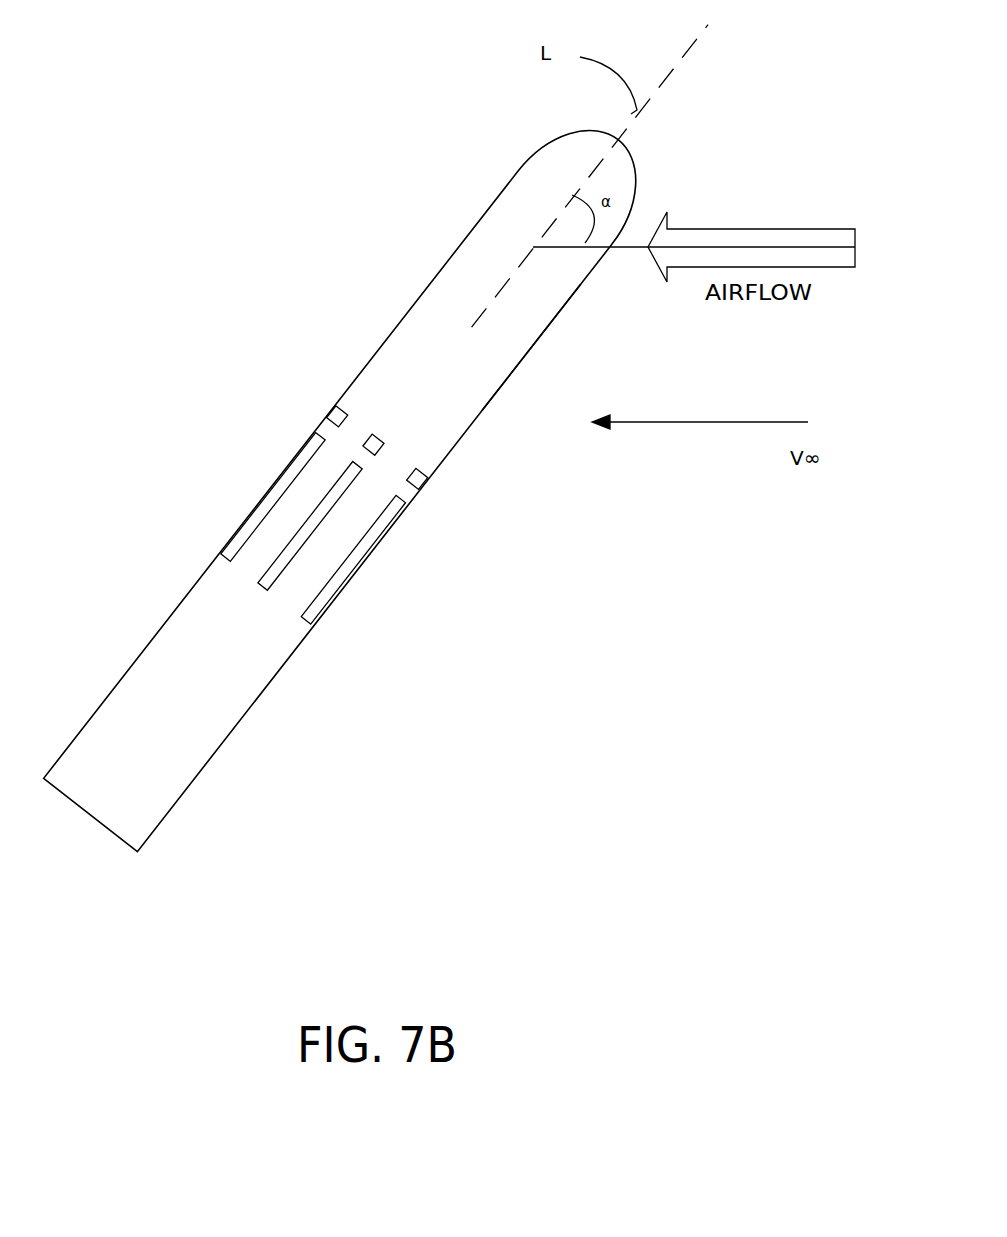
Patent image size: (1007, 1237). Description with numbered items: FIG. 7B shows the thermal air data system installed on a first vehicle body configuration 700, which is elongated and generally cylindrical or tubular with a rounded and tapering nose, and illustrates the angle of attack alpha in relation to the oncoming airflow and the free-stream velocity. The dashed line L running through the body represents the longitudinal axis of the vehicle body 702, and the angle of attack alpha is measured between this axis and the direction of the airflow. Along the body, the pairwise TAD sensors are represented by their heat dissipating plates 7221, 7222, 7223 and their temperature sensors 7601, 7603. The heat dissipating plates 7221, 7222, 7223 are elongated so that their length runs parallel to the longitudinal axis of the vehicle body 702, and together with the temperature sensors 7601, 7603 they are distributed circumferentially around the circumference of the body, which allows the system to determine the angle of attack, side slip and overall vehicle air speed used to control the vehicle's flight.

The first vehicle body configuration 700 is at (430, 282).
The vehicle body 702 is at (520, 362).
The heat dissipating plate 7221 is at (272, 477).
The heat dissipating plate 7222 is at (257, 582).
The heat dissipating plate 7223 is at (372, 557).
The temperature sensor 7601 is at (325, 412).
The temperature sensor 7603 is at (482, 533).